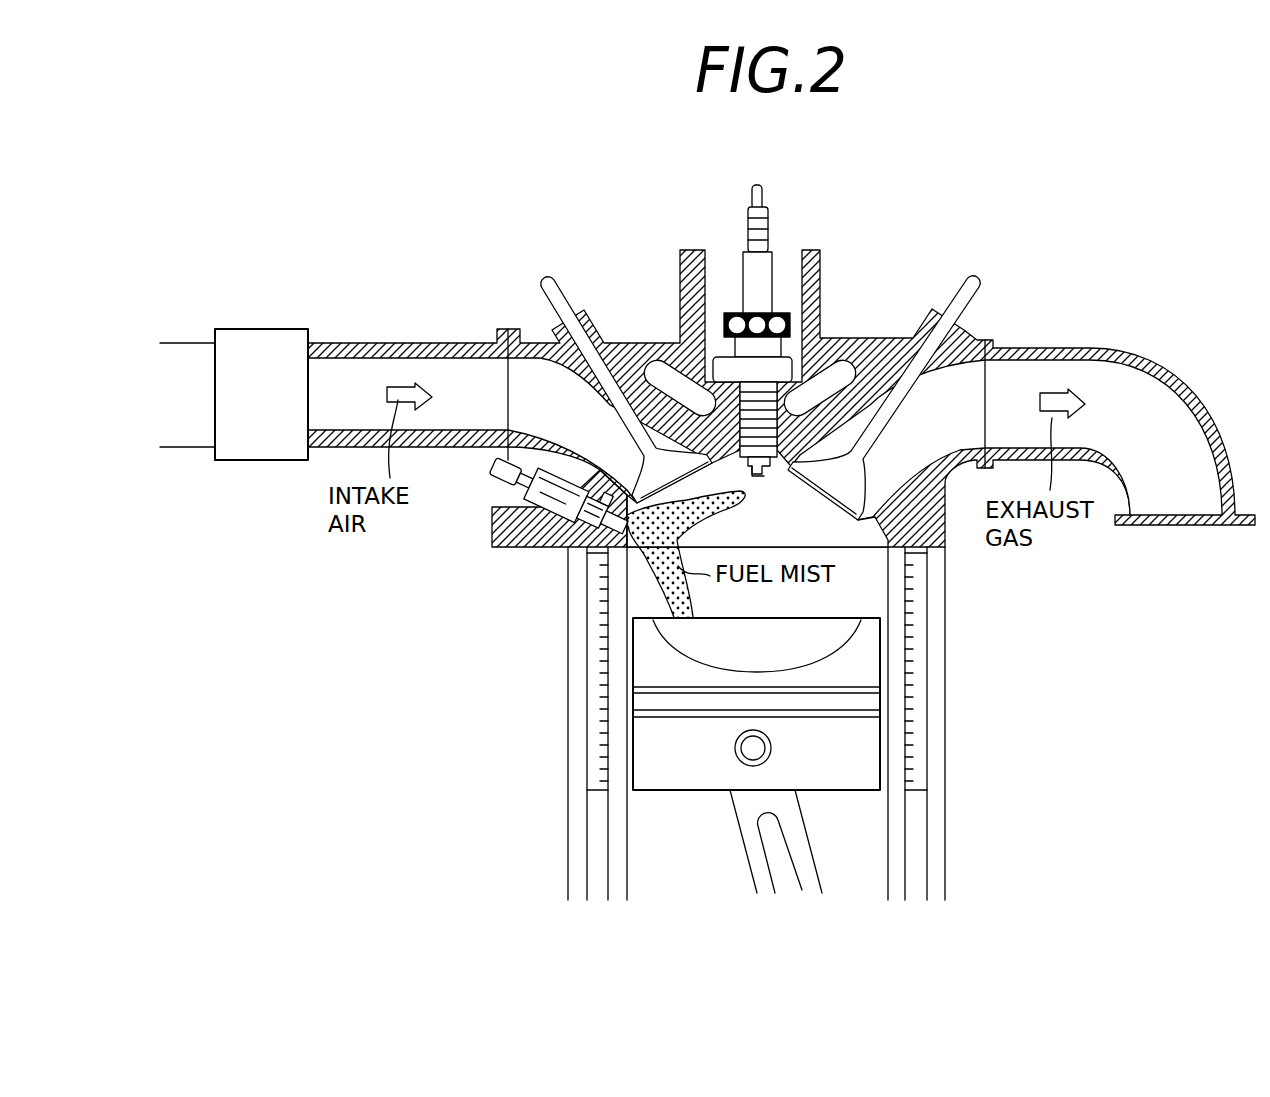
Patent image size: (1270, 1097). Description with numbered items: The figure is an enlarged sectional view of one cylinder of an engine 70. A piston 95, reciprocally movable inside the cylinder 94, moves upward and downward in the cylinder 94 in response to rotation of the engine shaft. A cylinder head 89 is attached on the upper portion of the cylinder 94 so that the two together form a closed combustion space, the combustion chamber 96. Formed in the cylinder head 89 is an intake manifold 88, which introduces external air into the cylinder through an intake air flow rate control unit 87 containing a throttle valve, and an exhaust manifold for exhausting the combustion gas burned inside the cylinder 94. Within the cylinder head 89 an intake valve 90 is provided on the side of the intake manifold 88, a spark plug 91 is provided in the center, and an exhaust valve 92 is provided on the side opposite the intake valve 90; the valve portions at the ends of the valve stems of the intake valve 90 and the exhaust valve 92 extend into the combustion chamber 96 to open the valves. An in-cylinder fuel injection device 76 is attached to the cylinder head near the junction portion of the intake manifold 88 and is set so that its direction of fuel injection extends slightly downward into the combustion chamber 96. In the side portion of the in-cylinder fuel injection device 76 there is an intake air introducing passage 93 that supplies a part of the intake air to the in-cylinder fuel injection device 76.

The engine 70 is at (965, 625).
The in-cylinder fuel injection device 76 is at (526, 548).
The intake air flow rate control unit 87 is at (268, 329).
The intake manifold 88 is at (385, 343).
The cylinder head 89 is at (662, 344).
The intake valve 90 is at (562, 290).
The spark plug 91 is at (768, 255).
The exhaust valve 92 is at (960, 292).
The intake air introducing passage 93 is at (572, 548).
The cylinder 94 is at (577, 720).
The piston 95 is at (862, 770).
The combustion chamber 96 is at (842, 594).